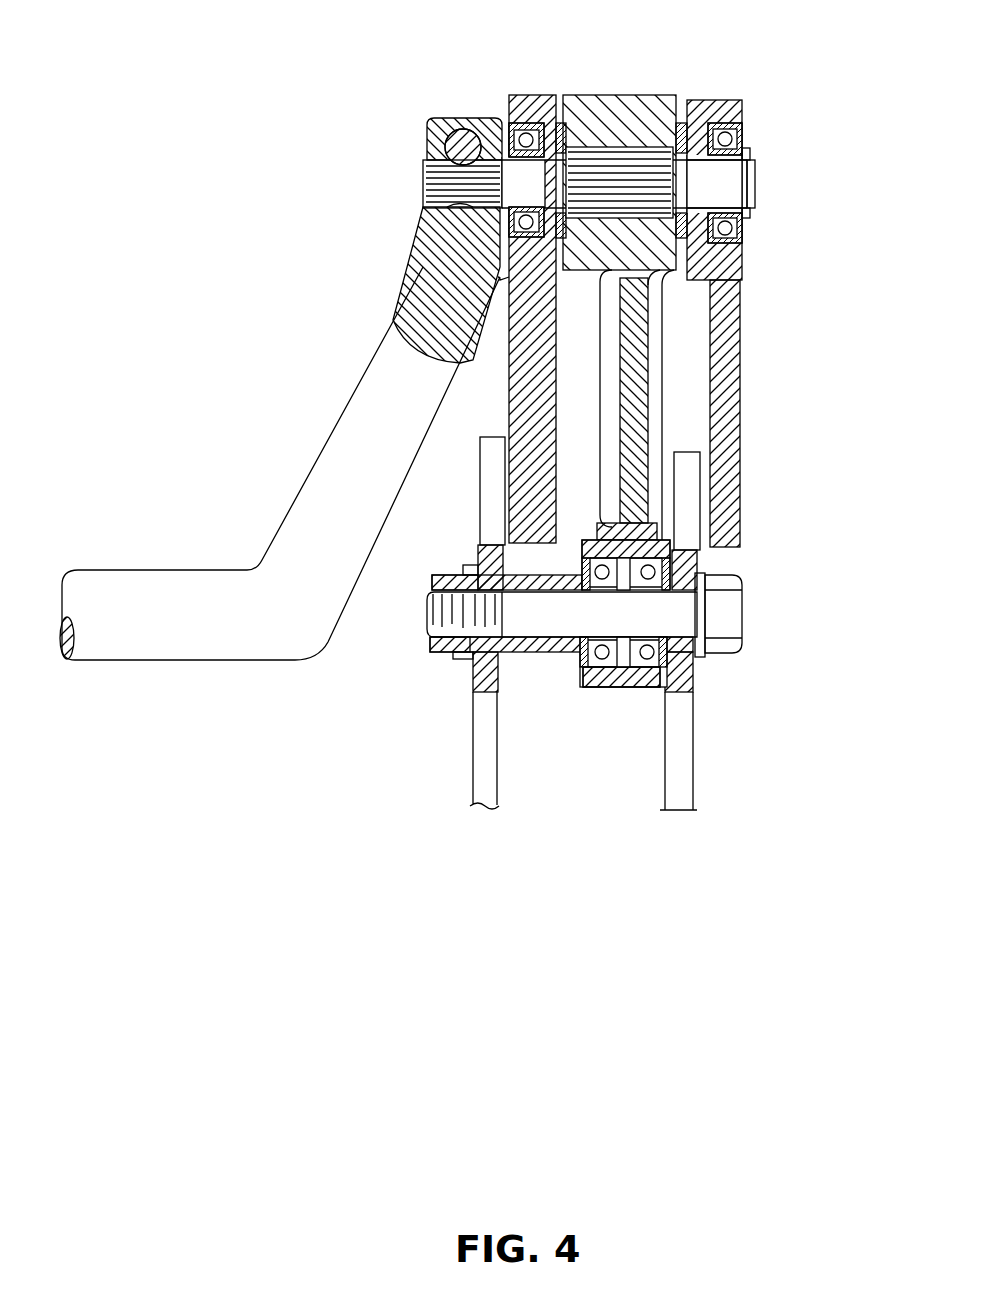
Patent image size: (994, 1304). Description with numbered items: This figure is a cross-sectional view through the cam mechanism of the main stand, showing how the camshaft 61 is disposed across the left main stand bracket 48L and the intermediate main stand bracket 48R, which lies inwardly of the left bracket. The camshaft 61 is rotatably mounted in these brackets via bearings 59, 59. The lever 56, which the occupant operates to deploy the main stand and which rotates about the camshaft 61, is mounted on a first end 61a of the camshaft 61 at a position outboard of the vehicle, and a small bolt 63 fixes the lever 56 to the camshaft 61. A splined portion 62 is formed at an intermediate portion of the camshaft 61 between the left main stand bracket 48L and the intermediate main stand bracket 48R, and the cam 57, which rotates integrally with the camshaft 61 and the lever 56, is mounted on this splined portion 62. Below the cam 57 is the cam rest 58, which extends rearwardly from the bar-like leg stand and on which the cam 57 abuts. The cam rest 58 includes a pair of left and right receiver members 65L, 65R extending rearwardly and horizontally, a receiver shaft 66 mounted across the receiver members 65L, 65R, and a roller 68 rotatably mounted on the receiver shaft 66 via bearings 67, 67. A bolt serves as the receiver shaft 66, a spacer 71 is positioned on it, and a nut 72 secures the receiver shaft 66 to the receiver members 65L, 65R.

The left main stand bracket 48L is at (527, 100).
The intermediate main stand bracket 48R is at (707, 110).
The lever 56 is at (370, 387).
The cam 57 is at (637, 383).
The cam rest 58 is at (591, 704).
The bearings 59 is at (510, 120).
The camshaft 61 is at (722, 183).
The first end of the camshaft 61a is at (432, 181).
The splined portion 62 is at (613, 127).
The small bolt 63 is at (450, 118).
The left receiver member 65L is at (483, 793).
The right receiver member 65R is at (675, 800).
The receiver shaft 66 is at (725, 612).
The bearings 67 is at (575, 670).
The roller 68 is at (620, 681).
The spacer 71 is at (515, 645).
The nut 72 is at (440, 646).